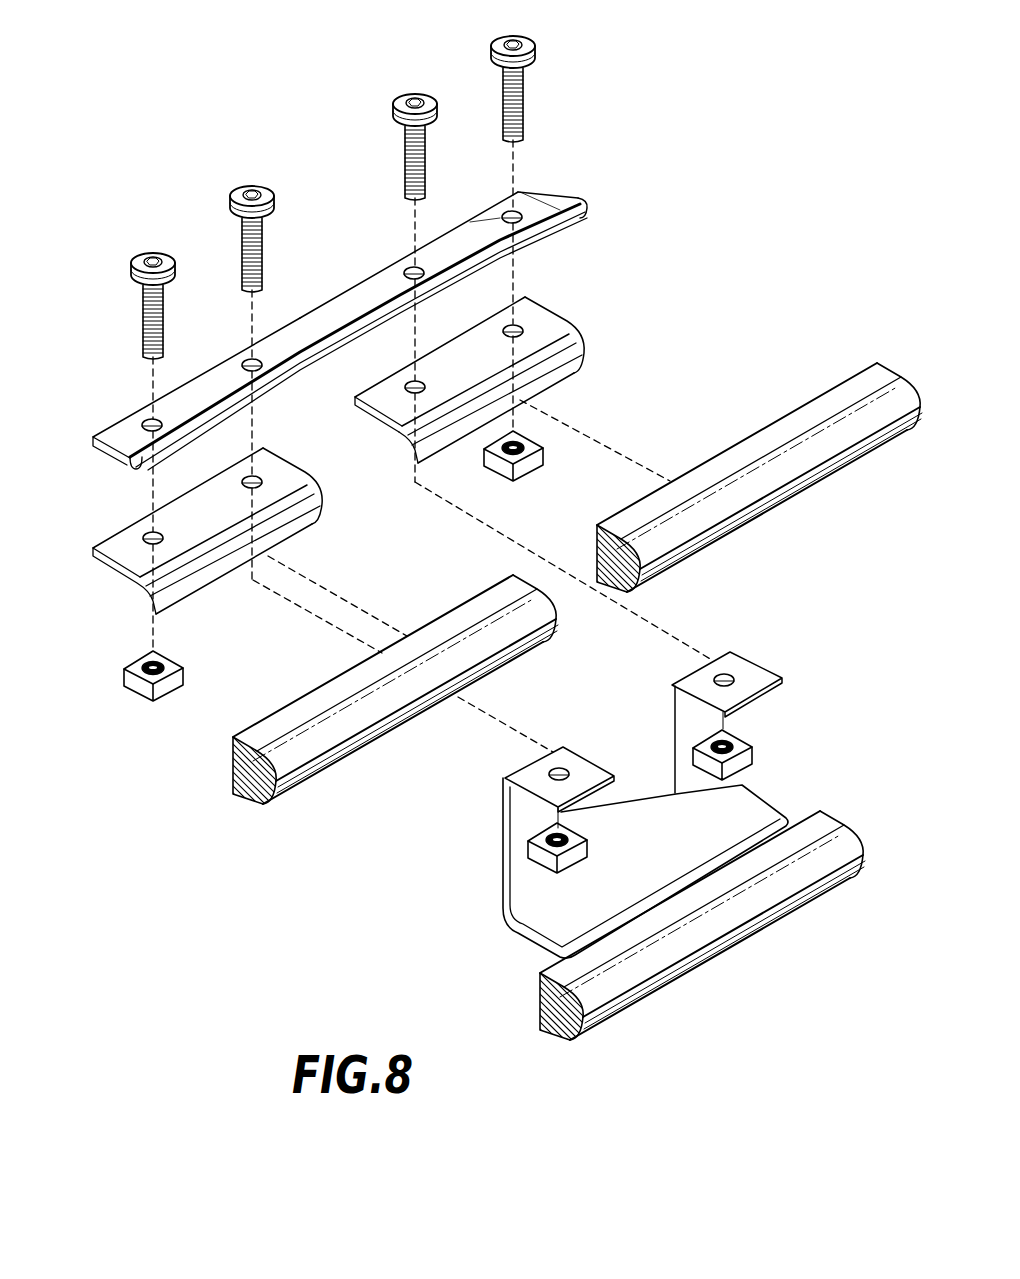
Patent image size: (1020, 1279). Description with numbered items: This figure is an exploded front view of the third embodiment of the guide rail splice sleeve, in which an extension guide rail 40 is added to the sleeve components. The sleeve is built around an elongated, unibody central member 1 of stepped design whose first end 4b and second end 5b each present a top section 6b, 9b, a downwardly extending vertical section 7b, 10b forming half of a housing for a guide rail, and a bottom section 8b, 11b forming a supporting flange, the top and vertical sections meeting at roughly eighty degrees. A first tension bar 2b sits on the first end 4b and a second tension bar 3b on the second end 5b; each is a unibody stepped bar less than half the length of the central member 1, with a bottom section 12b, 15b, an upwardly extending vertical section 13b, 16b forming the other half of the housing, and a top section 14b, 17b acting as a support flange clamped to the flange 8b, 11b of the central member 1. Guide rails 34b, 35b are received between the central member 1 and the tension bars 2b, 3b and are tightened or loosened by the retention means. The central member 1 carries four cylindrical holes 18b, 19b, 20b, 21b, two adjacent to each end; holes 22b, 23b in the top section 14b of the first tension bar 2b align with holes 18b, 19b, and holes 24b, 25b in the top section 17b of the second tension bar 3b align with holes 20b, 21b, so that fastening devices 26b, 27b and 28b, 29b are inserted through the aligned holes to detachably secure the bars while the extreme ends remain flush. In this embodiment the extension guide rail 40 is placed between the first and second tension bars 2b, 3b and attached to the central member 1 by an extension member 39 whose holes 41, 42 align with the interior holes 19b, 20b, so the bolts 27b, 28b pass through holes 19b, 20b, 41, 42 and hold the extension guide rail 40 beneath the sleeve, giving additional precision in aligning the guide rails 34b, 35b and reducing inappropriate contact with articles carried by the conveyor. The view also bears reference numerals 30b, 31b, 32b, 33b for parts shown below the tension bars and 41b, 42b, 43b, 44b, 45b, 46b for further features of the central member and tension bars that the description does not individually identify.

The elongated central member 1 is at (331, 309).
The first tension bar 2b is at (220, 514).
The second tension bar 3b is at (450, 373).
The first end of the central member 4b is at (223, 360).
The second end of the central member 5b is at (480, 212).
The top section of the central member 6b is at (190, 432).
The vertical section of the central member 7b is at (121, 467).
The bottom section of the central member 8b is at (108, 438).
The top section of the central member 9b is at (570, 222).
The vertical section of the central member 10b is at (560, 200).
The bottom section of the central member 11b is at (530, 190).
The bottom section of the first tension bar 12b is at (321, 522).
The vertical section of the first tension bar 13b is at (322, 489).
The top section of the first tension bar 14b is at (280, 470).
The bottom section of the second tension bar 15b is at (440, 450).
The vertical section of the second tension bar 16b is at (396, 452).
The top section of the second tension bar 17b is at (372, 410).
The hole 18b is at (147, 420).
The hole 19b is at (258, 358).
The hole 20b is at (408, 262).
The hole 21b is at (507, 205).
The hole 22b is at (140, 535).
The hole 23b is at (237, 478).
The hole 24b is at (405, 382).
The hole 25b is at (508, 322).
The fastening device 26b is at (135, 266).
The fastening device 27b is at (233, 198).
The fastening device 28b is at (398, 107).
The fastening device 29b is at (495, 45).
The nut 30b is at (165, 685).
The nut 31b is at (570, 857).
The nut 32b is at (747, 757).
The nut 33b is at (523, 466).
The guide rail 34b is at (405, 712).
The guide rail 35b is at (780, 492).
The extension member 39 is at (623, 802).
The extension guide rail 40 is at (687, 967).
The hole 41 is at (548, 768).
The hole 42 is at (713, 677).
The bar hem end 41b is at (93, 445).
The bar right end edge 42b is at (540, 195).
The bracket left end 43b is at (108, 550).
The bracket top surface 44b is at (270, 465).
The bracket top surface 45b is at (397, 405).
The bracket top surface 46b is at (537, 303).